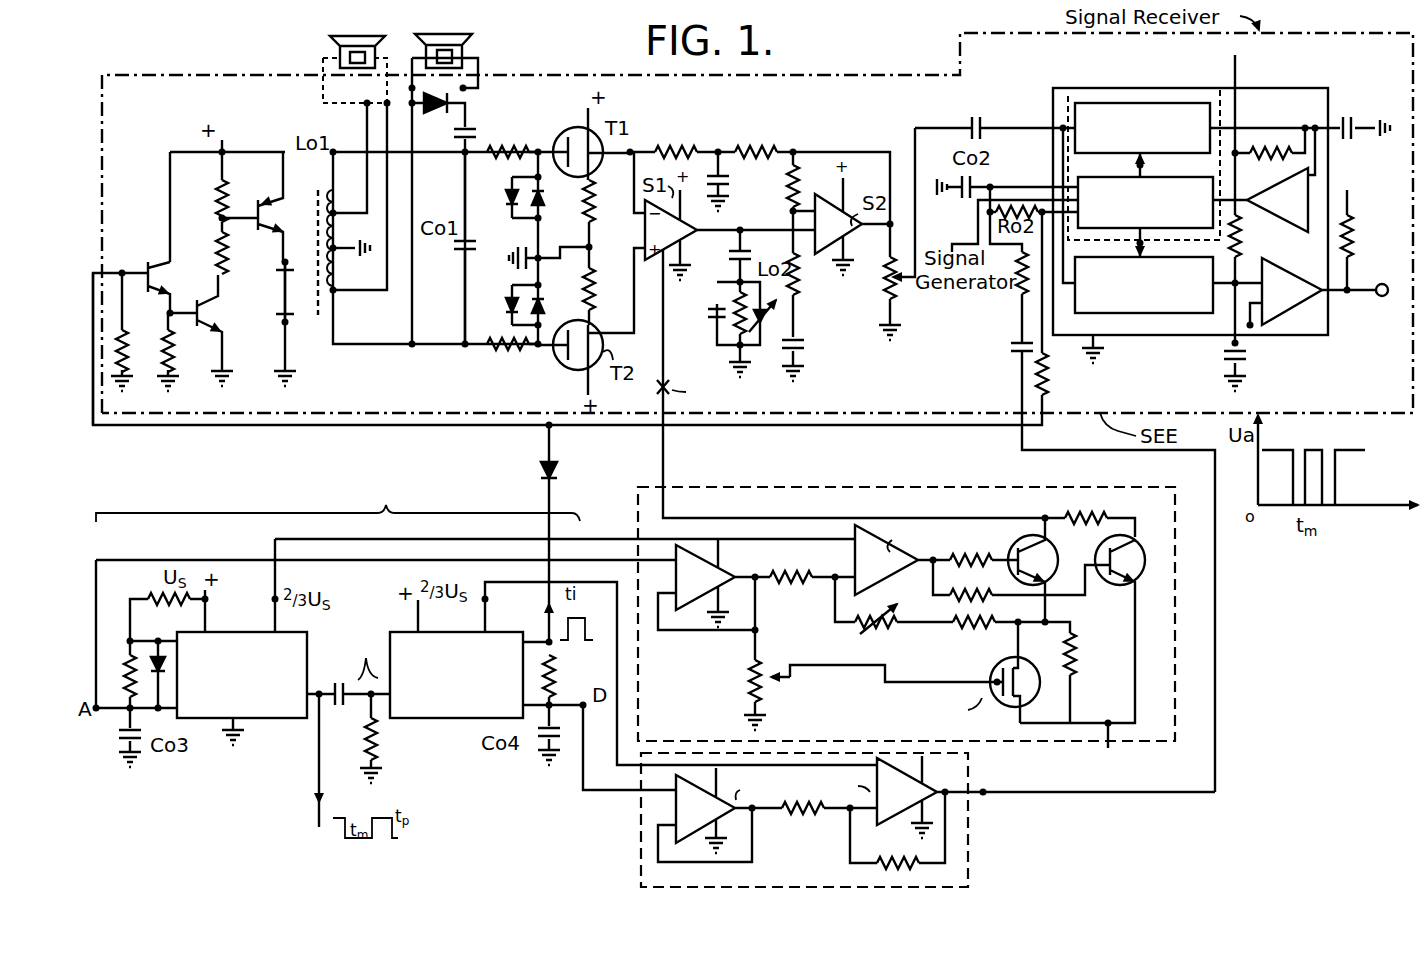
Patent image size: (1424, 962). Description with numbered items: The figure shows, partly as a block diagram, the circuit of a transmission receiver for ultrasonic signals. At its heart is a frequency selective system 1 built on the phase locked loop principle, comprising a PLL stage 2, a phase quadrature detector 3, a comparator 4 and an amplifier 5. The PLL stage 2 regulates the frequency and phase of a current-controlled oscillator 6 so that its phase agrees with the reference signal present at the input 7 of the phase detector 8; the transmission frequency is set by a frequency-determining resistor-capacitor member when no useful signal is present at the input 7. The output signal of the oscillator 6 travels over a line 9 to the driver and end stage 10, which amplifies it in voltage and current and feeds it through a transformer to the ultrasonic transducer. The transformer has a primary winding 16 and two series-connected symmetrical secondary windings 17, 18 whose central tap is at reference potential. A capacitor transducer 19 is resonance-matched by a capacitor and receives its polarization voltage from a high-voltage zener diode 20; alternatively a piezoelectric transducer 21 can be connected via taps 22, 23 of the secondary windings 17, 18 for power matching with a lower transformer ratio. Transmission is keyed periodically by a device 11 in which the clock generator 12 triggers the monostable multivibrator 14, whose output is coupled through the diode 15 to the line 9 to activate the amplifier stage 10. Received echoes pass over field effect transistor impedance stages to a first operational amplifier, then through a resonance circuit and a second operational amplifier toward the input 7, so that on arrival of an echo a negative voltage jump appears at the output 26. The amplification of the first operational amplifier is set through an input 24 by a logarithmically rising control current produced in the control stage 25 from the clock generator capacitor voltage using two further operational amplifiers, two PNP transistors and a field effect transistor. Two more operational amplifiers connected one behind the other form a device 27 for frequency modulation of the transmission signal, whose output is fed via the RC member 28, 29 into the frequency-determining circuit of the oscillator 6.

The frequency selective system 1 is at (1307, 211).
The PLL stage 2 is at (1163, 203).
The phase quadrature detector 3 is at (1144, 285).
The comparator 4 is at (1290, 284).
The amplifier 5 is at (1272, 228).
The oscillator 6 is at (1145, 202).
The input 7 is at (1026, 130).
The phase detector 8 is at (1142, 128).
The line 9 is at (324, 426).
The driver and end stage 10 is at (268, 62).
The device for transmitter pulse keying 11 is at (338, 500).
The clock generator 12 is at (242, 675).
The monostable multivibrator 14 is at (456, 675).
The diode 15 is at (564, 470).
The primary winding 16 is at (283, 298).
The secondary winding 17 is at (334, 296).
The secondary winding 18 is at (335, 198).
The capacitor transducer 19 is at (472, 46).
The high-voltage zener diode 20 is at (470, 100).
The piezoelectric transducer 21 is at (330, 42).
The tap 22 is at (338, 214).
The tap 23 is at (338, 262).
The input 24 is at (663, 318).
The control stage 25 is at (774, 487).
The output 26 is at (1390, 276).
The device for frequency modulation 27 is at (968, 852).
The RC member component 28 is at (1012, 347).
The RC member component 29 is at (1022, 302).